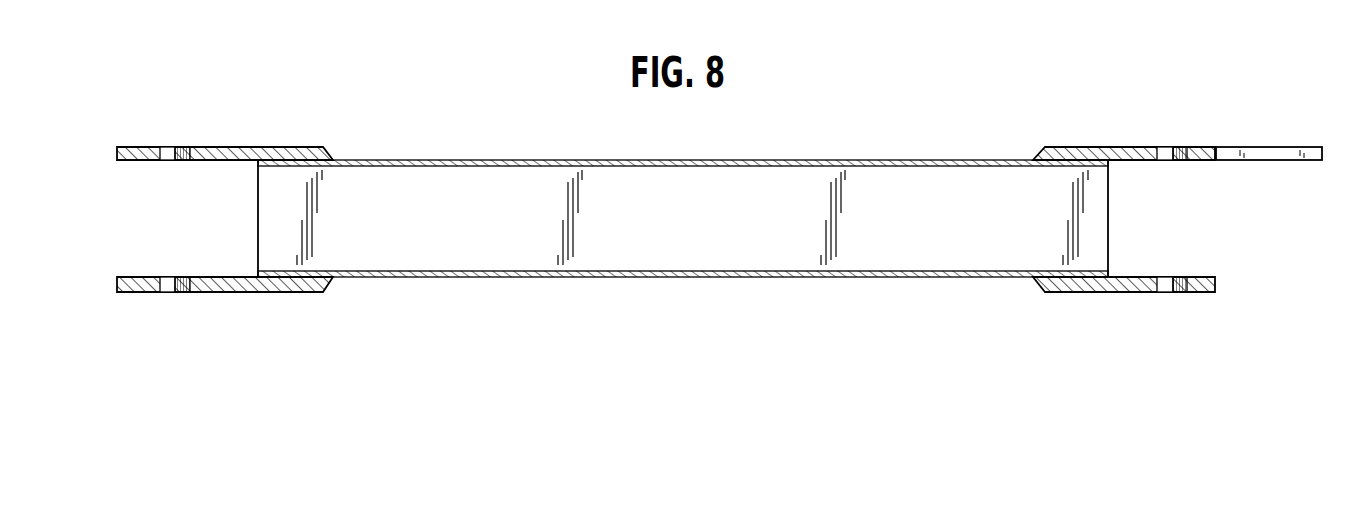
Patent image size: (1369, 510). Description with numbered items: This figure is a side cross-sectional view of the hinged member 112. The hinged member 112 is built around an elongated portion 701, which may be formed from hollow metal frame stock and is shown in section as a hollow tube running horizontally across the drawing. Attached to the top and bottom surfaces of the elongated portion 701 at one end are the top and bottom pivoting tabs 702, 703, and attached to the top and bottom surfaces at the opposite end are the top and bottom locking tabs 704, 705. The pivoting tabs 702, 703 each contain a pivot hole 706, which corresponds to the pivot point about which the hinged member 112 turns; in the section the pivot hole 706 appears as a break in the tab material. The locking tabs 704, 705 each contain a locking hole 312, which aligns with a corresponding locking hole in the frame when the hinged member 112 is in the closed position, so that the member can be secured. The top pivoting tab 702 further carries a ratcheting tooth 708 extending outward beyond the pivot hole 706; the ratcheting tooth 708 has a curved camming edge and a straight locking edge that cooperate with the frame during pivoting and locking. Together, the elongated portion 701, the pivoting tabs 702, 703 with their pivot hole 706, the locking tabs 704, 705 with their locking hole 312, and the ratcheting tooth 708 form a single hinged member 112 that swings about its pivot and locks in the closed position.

The hinged member 112 is at (517, 303).
The locking hole 312 is at (177, 145).
The elongated portion 701 is at (963, 185).
The top pivoting tab 702 is at (1105, 145).
The bottom pivoting tab 703 is at (1085, 293).
The top locking tab 704 is at (245, 145).
The bottom locking tab 705 is at (235, 293).
The pivot hole 706 is at (1175, 143).
The ratcheting tooth 708 is at (1268, 147).